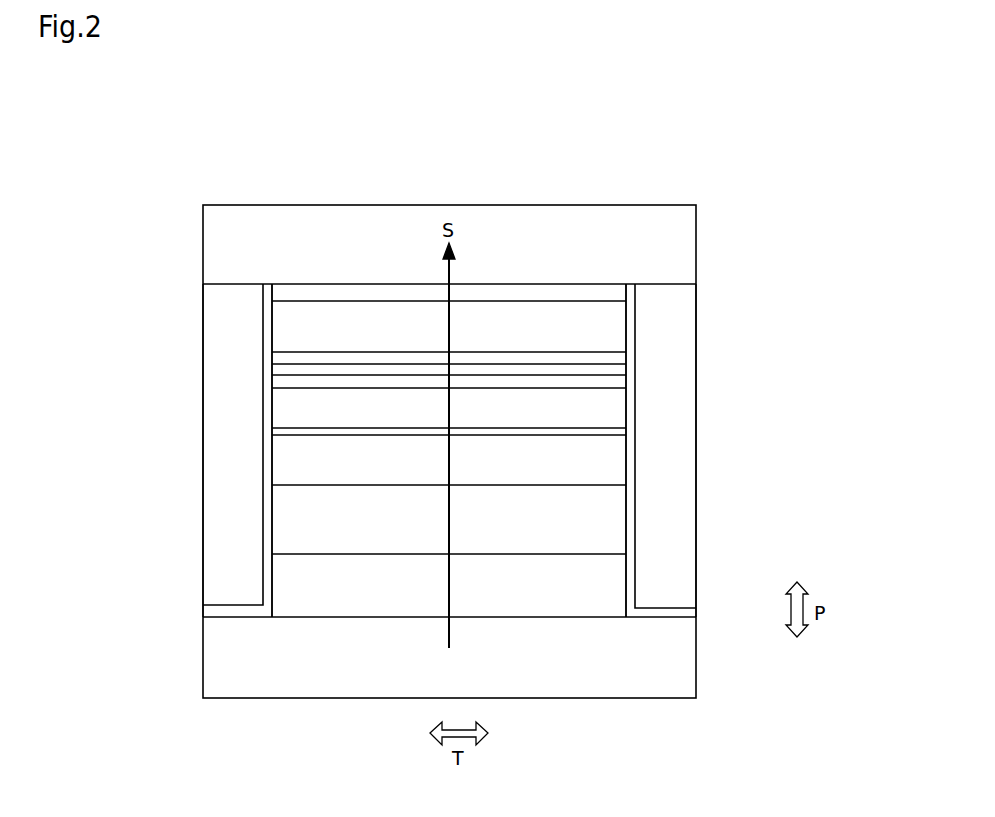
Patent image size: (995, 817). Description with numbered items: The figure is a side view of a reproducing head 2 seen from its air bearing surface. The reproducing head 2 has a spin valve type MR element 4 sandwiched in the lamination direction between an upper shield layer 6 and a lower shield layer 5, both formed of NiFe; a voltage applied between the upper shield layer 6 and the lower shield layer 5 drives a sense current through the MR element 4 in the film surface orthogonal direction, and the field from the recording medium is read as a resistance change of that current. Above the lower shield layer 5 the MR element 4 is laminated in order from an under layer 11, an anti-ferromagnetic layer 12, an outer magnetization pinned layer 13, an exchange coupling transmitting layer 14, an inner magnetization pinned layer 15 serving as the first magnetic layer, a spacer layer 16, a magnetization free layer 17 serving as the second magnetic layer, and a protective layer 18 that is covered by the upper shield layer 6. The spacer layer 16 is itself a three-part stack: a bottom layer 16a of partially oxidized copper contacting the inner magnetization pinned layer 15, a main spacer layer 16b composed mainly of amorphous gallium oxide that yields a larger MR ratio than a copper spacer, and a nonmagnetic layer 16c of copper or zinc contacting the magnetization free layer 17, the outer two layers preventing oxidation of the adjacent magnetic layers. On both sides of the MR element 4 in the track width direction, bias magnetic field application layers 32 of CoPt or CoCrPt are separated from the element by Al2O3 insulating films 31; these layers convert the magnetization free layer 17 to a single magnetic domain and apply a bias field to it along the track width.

The reproducing head 2 is at (468, 177).
The MR element 4 is at (820, 285).
The lower shield layer 5 is at (680, 645).
The upper shield layer 6 is at (677, 248).
The under layer 11 is at (619, 587).
The anti-ferromagnetic layer 12 is at (619, 523).
The outer magnetization pinned layer 13 is at (619, 463).
The exchange coupling transmitting layer 14 is at (619, 435).
The inner magnetization pinned layer 15 is at (619, 412).
The spacer layer 16 is at (547, 364).
The bottom layer 16a is at (619, 383).
The main spacer layer 16b is at (619, 368).
The nonmagnetic layer 16c is at (619, 355).
The magnetization free layer 17 is at (619, 317).
The protective layer 18 is at (619, 290).
The insulating film 31 is at (208, 612).
The bias magnetic field application layer 32 is at (208, 497).